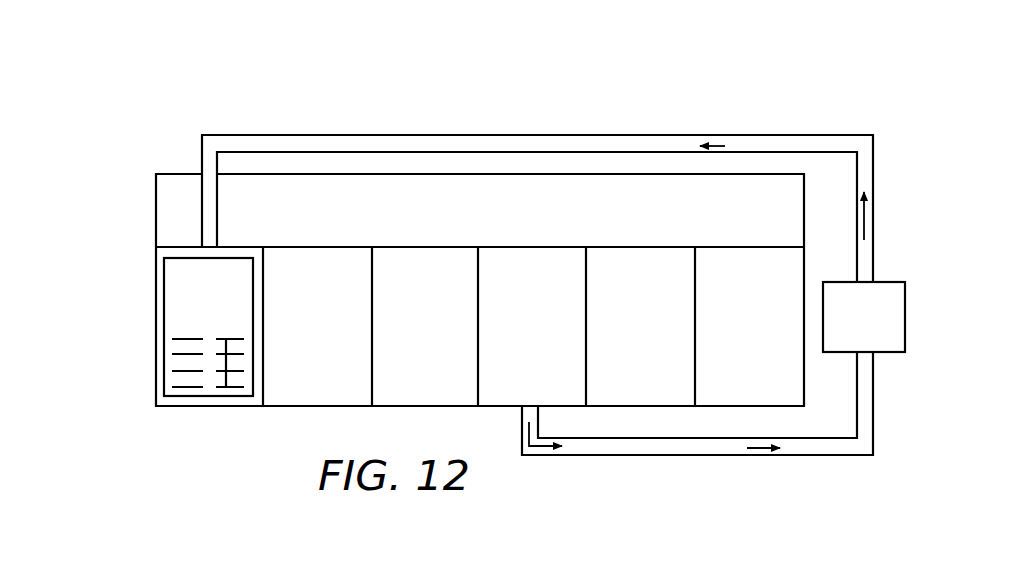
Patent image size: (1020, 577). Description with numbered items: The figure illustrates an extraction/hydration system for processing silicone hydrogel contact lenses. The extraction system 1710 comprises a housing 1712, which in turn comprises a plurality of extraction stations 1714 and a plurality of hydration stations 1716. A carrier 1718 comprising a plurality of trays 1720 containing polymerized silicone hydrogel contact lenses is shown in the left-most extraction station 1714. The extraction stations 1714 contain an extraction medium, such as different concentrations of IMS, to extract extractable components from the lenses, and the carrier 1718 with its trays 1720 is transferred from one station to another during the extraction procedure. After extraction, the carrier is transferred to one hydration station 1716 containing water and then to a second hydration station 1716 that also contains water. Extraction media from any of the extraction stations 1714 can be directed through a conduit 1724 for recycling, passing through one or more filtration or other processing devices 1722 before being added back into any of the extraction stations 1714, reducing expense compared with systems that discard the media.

The extraction system 1710 is at (136, 182).
The housing 1712 is at (262, 172).
The extraction station 1714 is at (160, 252).
The hydration station 1716 is at (672, 346).
The carrier 1718 is at (163, 314).
The tray 1720 is at (180, 340).
The processing device 1722 is at (882, 338).
The conduit 1724 is at (700, 456).